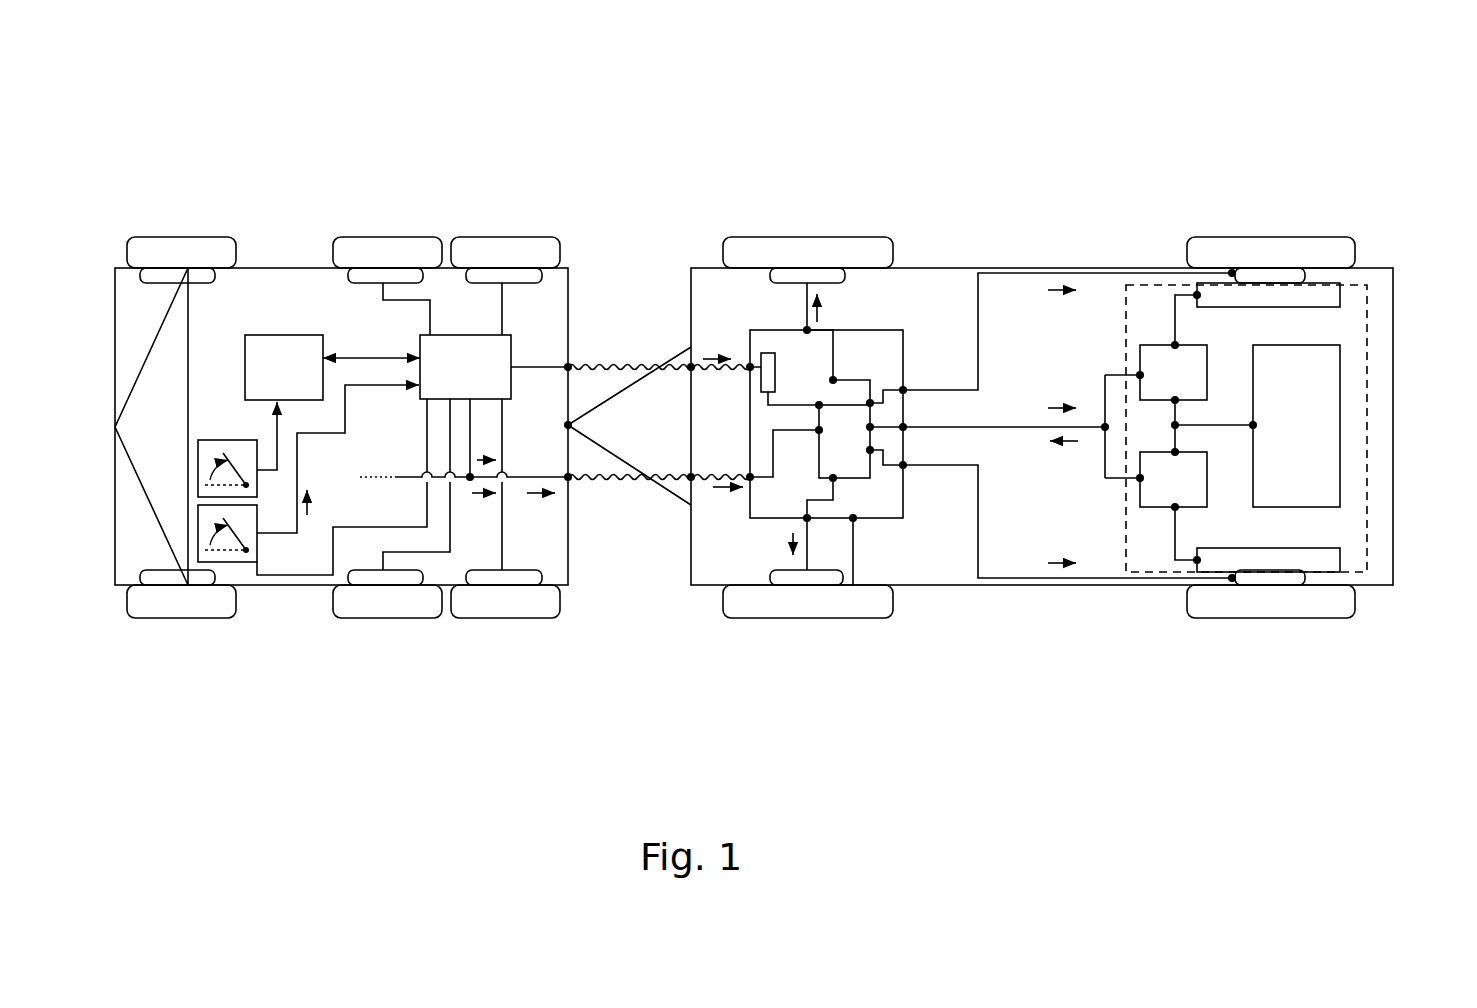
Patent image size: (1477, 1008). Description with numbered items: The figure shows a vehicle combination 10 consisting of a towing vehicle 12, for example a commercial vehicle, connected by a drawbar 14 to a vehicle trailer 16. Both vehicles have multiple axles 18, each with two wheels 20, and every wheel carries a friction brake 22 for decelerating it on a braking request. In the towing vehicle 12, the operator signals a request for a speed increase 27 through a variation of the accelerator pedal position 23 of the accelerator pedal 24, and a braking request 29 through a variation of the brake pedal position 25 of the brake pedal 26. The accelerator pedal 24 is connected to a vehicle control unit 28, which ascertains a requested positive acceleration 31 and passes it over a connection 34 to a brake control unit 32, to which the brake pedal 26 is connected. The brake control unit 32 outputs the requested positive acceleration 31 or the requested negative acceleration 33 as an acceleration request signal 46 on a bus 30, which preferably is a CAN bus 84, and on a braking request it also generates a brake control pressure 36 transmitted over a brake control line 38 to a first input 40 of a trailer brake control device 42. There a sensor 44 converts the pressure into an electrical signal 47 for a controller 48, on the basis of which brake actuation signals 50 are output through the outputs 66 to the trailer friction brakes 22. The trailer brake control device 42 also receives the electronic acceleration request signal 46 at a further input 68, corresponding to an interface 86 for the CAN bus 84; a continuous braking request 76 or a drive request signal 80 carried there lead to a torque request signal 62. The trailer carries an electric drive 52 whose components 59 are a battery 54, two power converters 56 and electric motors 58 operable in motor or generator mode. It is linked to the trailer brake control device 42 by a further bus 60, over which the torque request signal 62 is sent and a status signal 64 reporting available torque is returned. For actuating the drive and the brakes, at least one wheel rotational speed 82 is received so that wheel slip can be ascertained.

The vehicle combination 10 is at (824, 103).
The towing vehicle 12 is at (337, 147).
The drawbar 14 is at (618, 397).
The vehicle trailer 16 is at (1241, 156).
The axles 18 is at (185, 698).
The wheels 20 is at (192, 247).
The friction brake 22 is at (166, 277).
The accelerator pedal position 23 is at (200, 472).
The accelerator pedal 24 is at (218, 439).
The brake pedal position 25 is at (200, 545).
The brake pedal 26 is at (257, 582).
The request for a speed increase 27 is at (270, 440).
The vehicle control unit 28 is at (271, 382).
The braking request 29 is at (310, 510).
The bus 30 is at (394, 476).
The requested positive acceleration 31 is at (482, 460).
The brake control unit 32 is at (453, 382).
The requested negative acceleration 33 is at (472, 496).
The connection 34 is at (378, 350).
The brake control pressure 36 is at (551, 345).
The brake control line 38 is at (612, 362).
The first input 40 is at (749, 360).
The trailer brake control device 42 is at (904, 331).
The sensor 44 is at (757, 393).
The acceleration request signal 46 is at (703, 359).
The electrical signal 47 is at (813, 403).
The controller 48 is at (833, 441).
The brake actuation signal 50 is at (815, 318).
The electric drive 52 is at (1368, 330).
The battery 54 is at (1284, 442).
The power converter 56 is at (1160, 387).
The electric motors 58 is at (1342, 288).
The component 59 is at (1352, 428).
The bus 60 is at (943, 425).
The torque request signal 62 is at (1052, 406).
The status signal 64 is at (1070, 444).
The outputs 66 is at (910, 402).
The further input 68 is at (749, 476).
The continuous braking request 76 is at (620, 492).
The drive request signal 80 is at (530, 496).
The wheel rotational speed 82 is at (843, 536).
The CAN bus 84 is at (663, 482).
The interface 86 is at (754, 481).